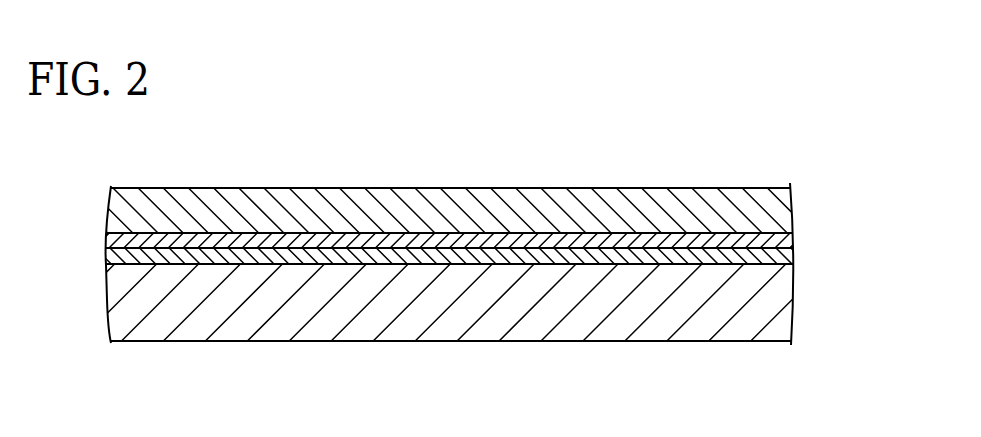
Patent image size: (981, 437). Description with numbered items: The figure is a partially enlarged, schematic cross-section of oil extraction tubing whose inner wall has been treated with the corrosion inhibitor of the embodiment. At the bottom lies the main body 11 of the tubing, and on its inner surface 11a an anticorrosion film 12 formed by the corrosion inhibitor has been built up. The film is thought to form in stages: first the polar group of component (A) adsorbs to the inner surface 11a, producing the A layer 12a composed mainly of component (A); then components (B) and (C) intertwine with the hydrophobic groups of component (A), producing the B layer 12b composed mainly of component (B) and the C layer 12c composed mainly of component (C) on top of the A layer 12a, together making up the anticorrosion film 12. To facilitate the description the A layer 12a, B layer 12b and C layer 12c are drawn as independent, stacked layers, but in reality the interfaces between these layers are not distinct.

The main body 11 is at (767, 307).
The inner surface 11a is at (442, 261).
The anticorrosion film 12 is at (492, 221).
The A layer 12a is at (482, 255).
The B layer 12b is at (778, 241).
The C layer 12c is at (778, 213).